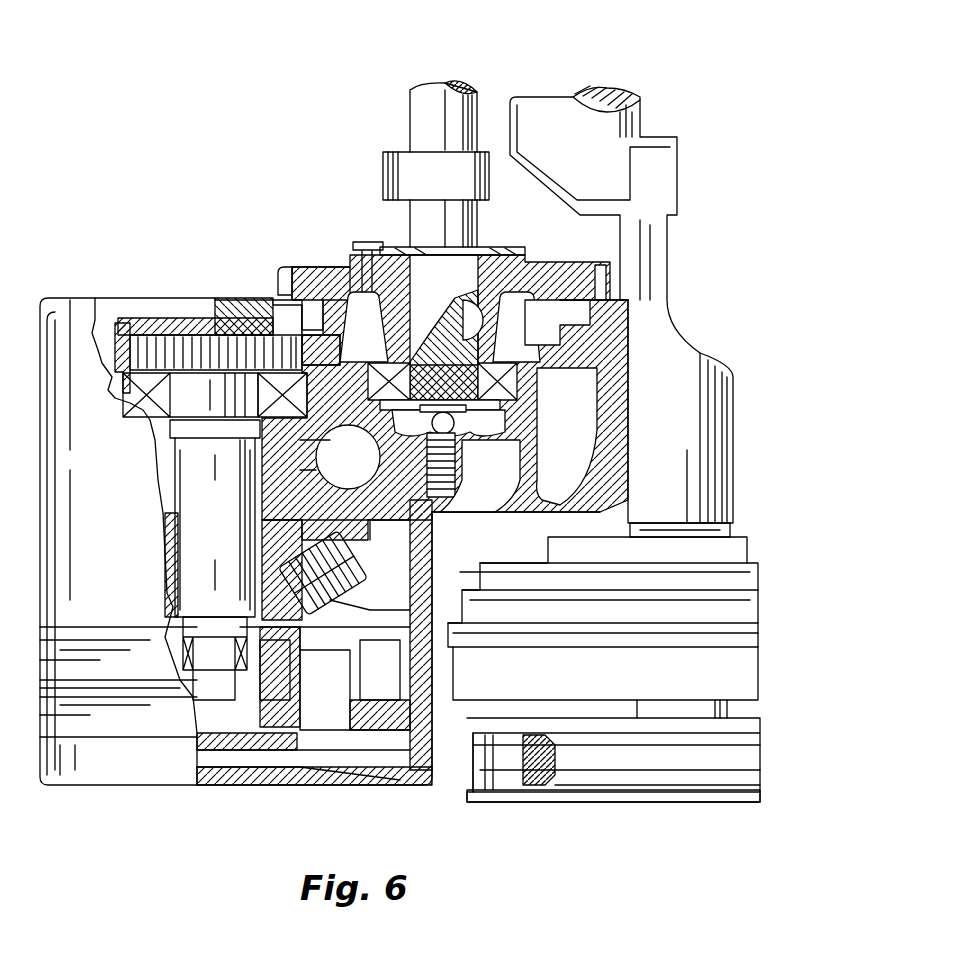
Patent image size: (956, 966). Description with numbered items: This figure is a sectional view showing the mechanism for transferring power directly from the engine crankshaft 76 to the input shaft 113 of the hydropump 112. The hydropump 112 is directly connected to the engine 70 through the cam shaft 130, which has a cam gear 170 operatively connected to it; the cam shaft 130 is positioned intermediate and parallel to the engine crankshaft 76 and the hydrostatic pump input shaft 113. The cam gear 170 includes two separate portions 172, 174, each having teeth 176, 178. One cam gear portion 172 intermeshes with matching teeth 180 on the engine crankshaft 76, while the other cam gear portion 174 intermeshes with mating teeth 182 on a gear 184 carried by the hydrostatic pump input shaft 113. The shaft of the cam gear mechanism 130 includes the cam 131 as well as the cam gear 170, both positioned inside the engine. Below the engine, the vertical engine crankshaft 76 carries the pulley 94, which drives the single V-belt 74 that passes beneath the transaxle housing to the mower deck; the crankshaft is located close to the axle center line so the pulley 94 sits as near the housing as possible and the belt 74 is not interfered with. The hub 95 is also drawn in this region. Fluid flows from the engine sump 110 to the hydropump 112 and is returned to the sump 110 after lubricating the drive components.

The engine 70 is at (571, 65).
The V-belt 74 is at (540, 790).
The engine crankshaft 76 is at (662, 483).
The pulley 94 is at (487, 803).
The hub 95 is at (524, 683).
The engine sump 110 is at (580, 423).
The hydropump 112 is at (147, 262).
The input shaft 113 is at (222, 531).
The cam shaft 130 is at (362, 152).
The cam 131 is at (412, 105).
The cam gear 170 is at (331, 285).
The cam gear portion 172 is at (302, 262).
The cam gear portion 174 is at (330, 347).
The teeth 176 is at (278, 275).
The teeth 178 is at (312, 333).
The matching teeth 180 is at (598, 266).
The mating teeth 182 is at (128, 350).
The gear 184 is at (168, 345).